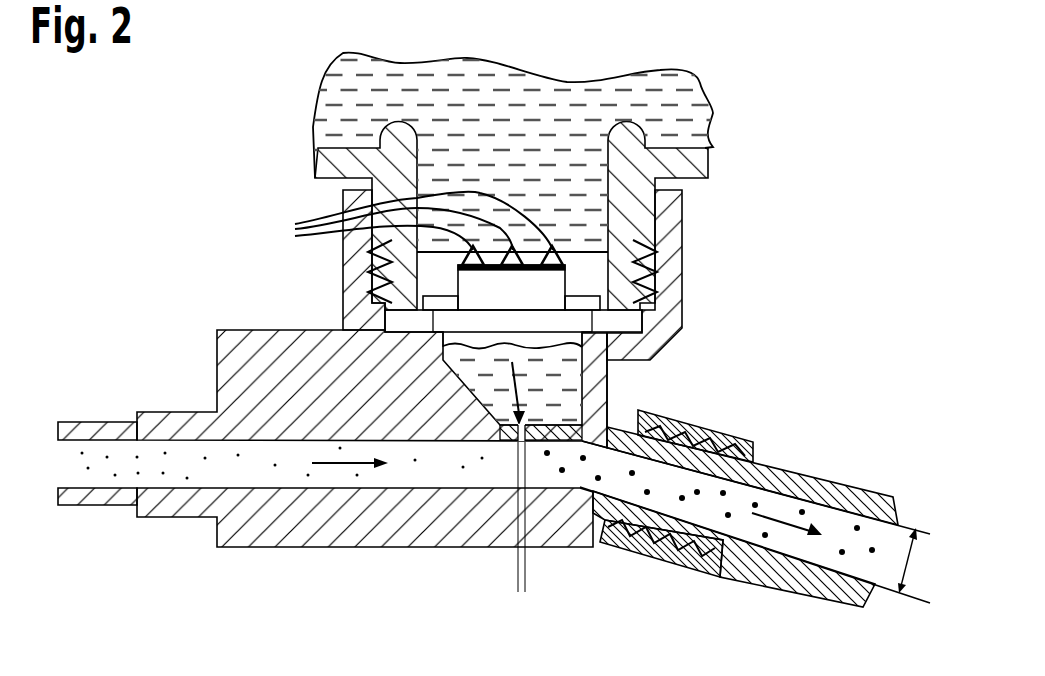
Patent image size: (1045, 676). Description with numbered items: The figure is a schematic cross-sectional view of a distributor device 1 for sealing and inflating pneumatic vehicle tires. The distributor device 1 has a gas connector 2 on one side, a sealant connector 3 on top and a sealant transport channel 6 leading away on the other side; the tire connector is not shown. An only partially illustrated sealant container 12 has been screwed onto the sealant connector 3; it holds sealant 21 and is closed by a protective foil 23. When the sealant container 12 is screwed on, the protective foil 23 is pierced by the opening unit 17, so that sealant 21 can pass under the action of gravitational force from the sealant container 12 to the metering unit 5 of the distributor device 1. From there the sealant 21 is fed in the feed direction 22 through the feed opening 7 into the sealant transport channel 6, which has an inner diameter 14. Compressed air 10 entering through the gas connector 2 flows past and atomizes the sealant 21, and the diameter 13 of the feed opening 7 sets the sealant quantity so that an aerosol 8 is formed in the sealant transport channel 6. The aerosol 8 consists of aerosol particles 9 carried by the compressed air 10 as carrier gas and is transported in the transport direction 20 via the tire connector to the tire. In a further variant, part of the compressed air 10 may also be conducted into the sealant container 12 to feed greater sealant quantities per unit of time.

The distributor device 1 is at (138, 202).
The gas connector 2 is at (70, 432).
The sealant connector 3 is at (667, 280).
The metering unit 5 is at (605, 378).
The sealant transport channel 6 is at (865, 500).
The feed opening 7 is at (605, 380).
The aerosol 8 is at (775, 488).
The aerosol particle 9 is at (805, 508).
The compressed air 10 is at (243, 470).
The sealant container 12 is at (685, 168).
The diameter of the feed opening 13 is at (550, 577).
The inner diameter of the sealant transport channel 14 is at (906, 560).
The opening unit 17 is at (411, 228).
The transport direction of the aerosol 20 is at (345, 465).
The sealant 21 is at (685, 113).
The feed direction of the sealant 22 is at (545, 372).
The protective foil 23 is at (583, 250).